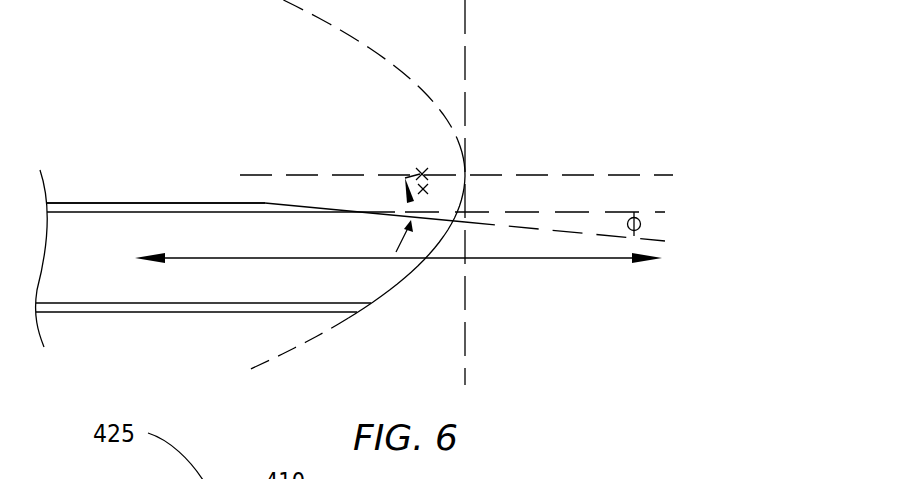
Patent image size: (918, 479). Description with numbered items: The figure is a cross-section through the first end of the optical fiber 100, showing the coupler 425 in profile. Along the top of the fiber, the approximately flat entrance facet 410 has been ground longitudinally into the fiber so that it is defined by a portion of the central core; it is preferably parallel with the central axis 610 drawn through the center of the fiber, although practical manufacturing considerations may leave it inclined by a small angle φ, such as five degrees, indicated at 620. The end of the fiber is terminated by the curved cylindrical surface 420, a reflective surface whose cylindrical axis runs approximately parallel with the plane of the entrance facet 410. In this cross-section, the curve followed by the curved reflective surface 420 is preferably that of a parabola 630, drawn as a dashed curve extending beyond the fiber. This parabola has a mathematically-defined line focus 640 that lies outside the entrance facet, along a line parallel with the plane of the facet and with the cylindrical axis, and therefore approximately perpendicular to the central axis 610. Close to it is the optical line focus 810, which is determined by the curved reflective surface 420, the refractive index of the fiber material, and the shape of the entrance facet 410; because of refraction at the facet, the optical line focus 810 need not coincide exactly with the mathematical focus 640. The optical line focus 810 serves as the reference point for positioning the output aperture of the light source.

The optical fiber 100 is at (115, 267).
The entrance facet 410 is at (466, 212).
The curved cylindrical surface 420 is at (420, 263).
The coupler 425 is at (250, 237).
The central axis 610 is at (607, 260).
The angle φ 620 is at (376, 239).
The parabola 630 is at (368, 45).
The mathematically-defined line focus 640 is at (421, 170).
The optical line focus 810 is at (424, 188).